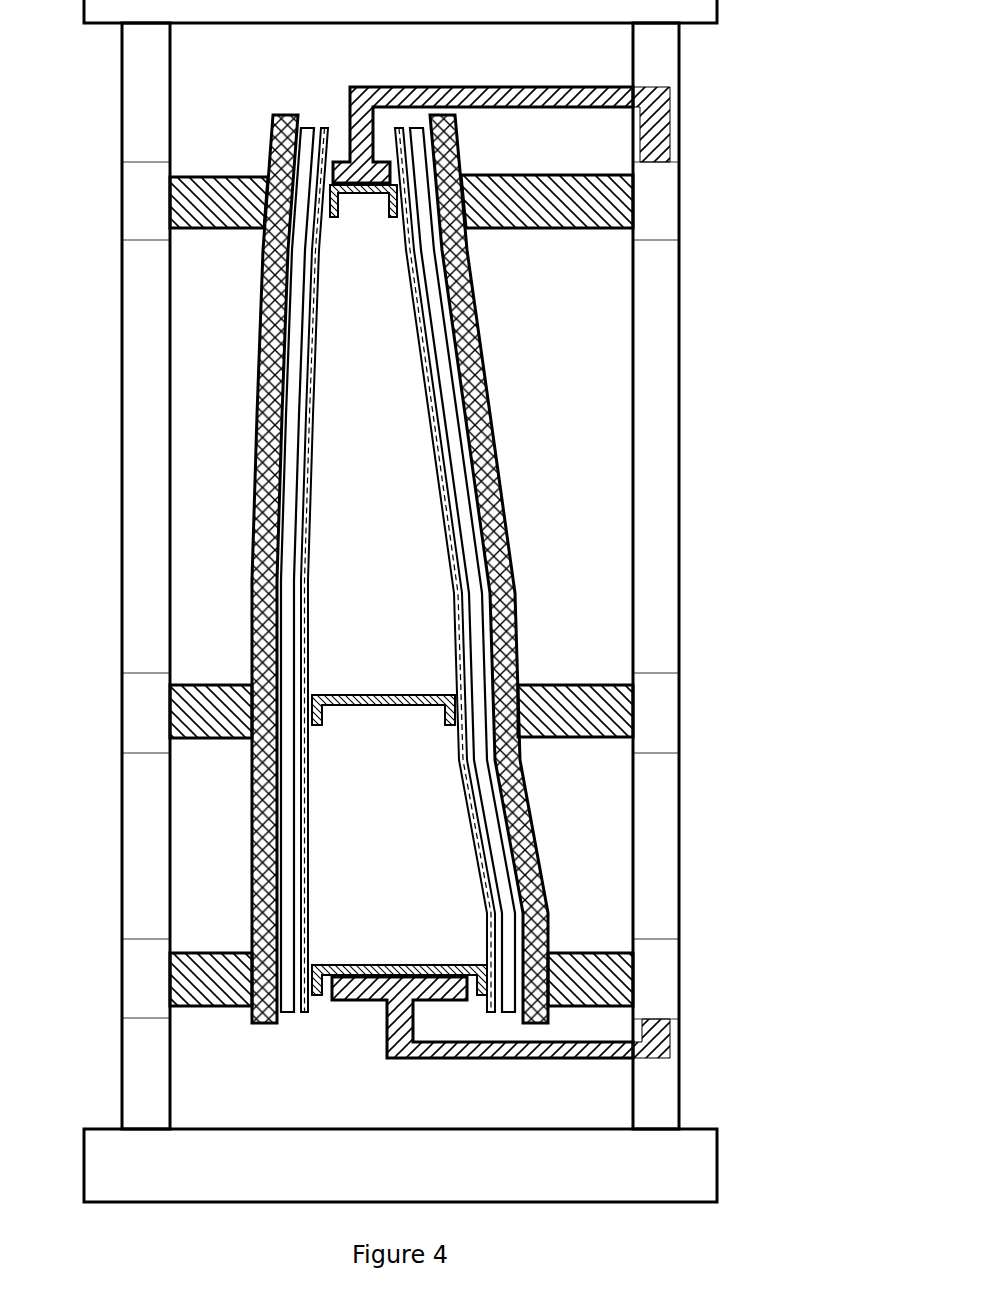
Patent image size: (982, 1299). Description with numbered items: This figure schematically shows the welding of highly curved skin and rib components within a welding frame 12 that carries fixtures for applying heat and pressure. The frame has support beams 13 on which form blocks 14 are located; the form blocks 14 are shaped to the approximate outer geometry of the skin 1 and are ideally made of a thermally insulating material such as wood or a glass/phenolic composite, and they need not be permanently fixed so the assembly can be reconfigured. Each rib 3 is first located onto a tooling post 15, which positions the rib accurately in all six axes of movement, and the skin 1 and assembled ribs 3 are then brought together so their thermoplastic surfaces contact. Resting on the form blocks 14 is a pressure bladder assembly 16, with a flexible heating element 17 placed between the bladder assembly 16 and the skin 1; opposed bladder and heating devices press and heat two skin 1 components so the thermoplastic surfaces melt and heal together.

The skin 1 is at (440, 487).
The rib 3 is at (382, 695).
The end plates 12 is at (655, 1085).
The support beams 13 is at (658, 985).
The form blocks 14 is at (588, 960).
The tooling post 15 is at (365, 1002).
The pressure bladder assembly 16 is at (483, 428).
The flexible heating element 17 is at (462, 517).